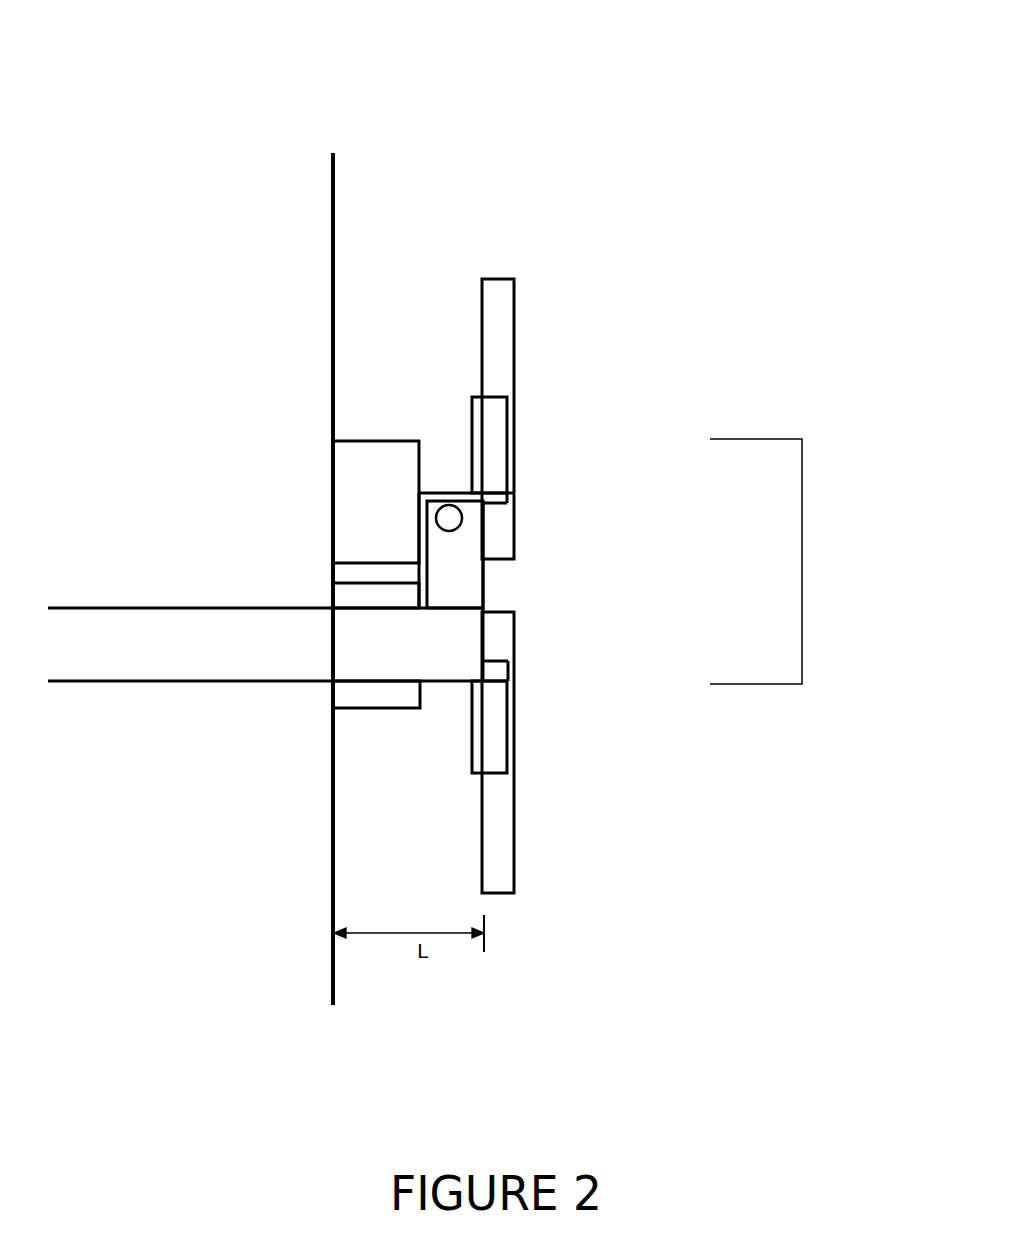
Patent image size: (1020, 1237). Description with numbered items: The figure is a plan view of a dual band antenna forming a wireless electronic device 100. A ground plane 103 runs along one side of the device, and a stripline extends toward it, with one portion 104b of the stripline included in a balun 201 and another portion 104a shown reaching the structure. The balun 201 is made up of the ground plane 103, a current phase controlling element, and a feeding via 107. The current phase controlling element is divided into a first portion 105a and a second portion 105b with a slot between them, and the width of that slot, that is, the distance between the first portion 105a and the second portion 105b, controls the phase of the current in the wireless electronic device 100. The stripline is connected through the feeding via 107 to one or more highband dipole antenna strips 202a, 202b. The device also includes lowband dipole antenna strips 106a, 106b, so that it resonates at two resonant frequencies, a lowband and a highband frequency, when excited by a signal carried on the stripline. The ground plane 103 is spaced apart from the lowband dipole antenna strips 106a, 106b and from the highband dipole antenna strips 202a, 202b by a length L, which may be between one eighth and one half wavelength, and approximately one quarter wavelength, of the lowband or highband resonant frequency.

The wireless electronic device 100 is at (552, 158).
The ground plane 103 is at (228, 803).
The support beam 104a is at (280, 653).
The portion of the stripline 104b is at (440, 582).
The first portion of the current phase controlling element 105a is at (378, 546).
The second portion of the current phase controlling element 105b is at (365, 591).
The lowband dipole antenna strip 106a is at (497, 335).
The lowband dipole antenna strip 106b is at (500, 827).
The feeding via 107 is at (449, 518).
The balun 201 is at (802, 561).
The highband dipole antenna strip 202a is at (490, 440).
The highband dipole antenna strip 202b is at (492, 722).